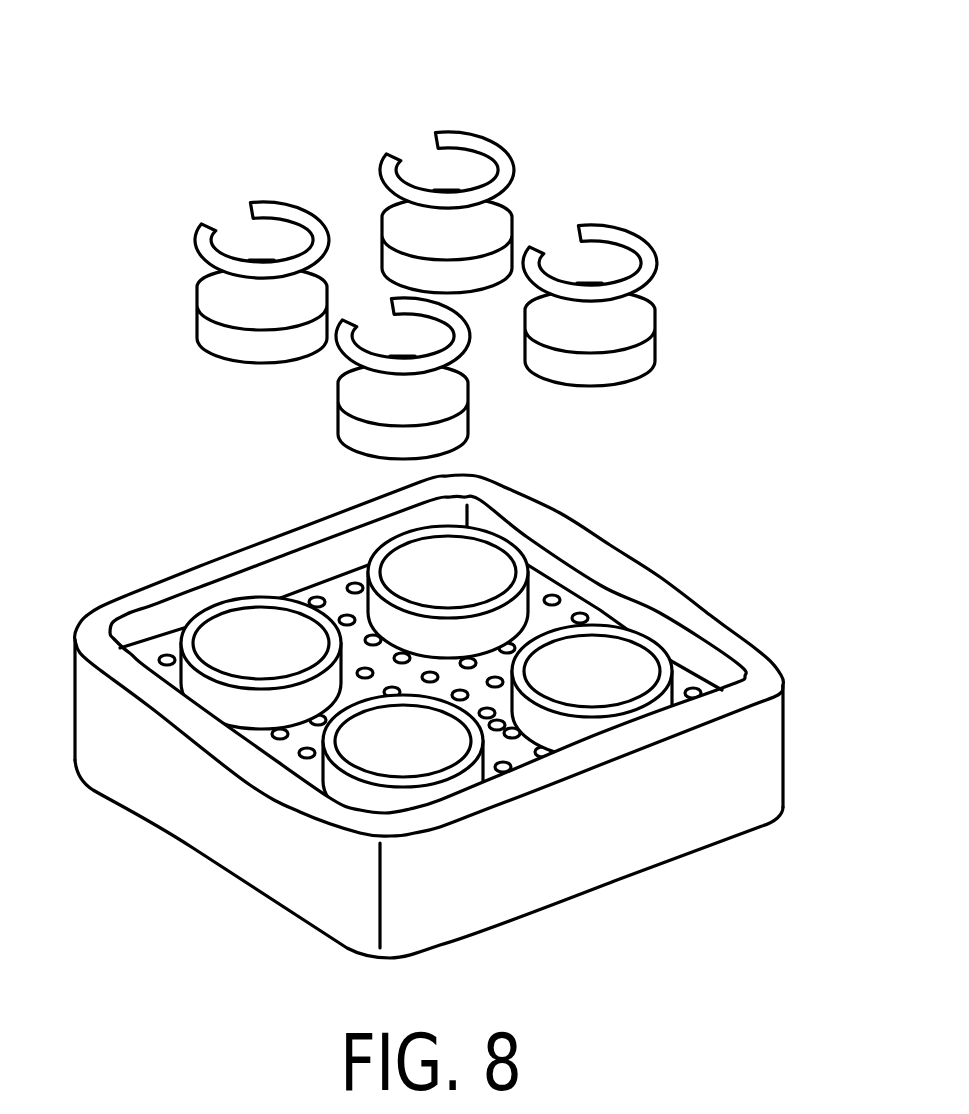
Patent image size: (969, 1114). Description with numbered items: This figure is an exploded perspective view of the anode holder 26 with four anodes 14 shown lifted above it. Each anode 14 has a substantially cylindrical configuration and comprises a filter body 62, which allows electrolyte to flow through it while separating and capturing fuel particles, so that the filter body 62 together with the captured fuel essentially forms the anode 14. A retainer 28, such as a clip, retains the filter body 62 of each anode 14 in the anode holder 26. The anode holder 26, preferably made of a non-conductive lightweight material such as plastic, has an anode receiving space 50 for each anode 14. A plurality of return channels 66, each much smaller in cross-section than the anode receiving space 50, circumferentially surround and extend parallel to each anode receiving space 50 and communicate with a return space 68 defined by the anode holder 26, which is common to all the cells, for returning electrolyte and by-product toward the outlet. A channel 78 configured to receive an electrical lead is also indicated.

The anode 14 is at (437, 248).
The retainer 28 is at (458, 113).
The filter body 62 is at (502, 220).
The anode holder 26 is at (410, 716).
The anode receiving space 50 is at (231, 641).
The return space 68 is at (564, 605).
The return channel 66 is at (279, 735).
The channel 78 is at (498, 728).